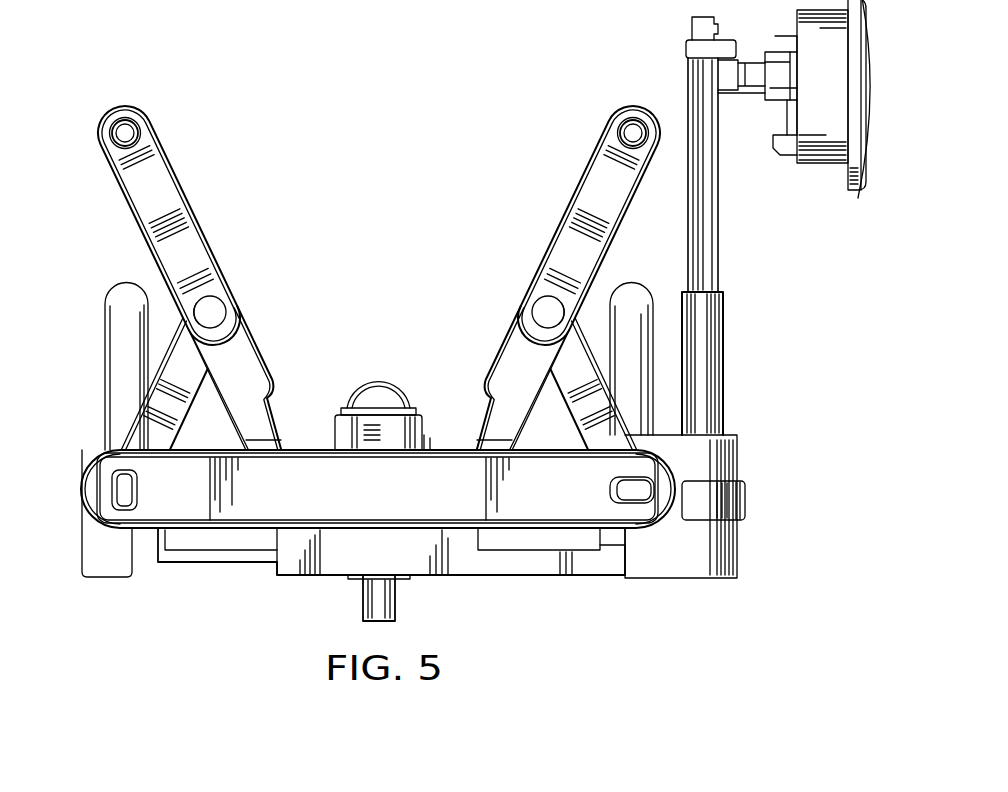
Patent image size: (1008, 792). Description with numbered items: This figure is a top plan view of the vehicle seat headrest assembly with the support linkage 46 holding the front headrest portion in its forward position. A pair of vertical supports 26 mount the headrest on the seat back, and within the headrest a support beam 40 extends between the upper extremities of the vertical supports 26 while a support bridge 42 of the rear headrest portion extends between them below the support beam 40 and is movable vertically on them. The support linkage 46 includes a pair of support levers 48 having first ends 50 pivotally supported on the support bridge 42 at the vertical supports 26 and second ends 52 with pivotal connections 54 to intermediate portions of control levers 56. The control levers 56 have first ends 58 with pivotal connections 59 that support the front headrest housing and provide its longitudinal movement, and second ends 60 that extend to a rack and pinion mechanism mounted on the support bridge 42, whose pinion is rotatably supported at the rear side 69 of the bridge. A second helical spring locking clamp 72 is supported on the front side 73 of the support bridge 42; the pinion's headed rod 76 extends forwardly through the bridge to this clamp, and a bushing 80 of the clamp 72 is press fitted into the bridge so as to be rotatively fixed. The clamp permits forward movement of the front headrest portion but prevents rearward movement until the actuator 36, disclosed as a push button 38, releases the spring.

The vertical supports 26 is at (105, 328).
The actuator 36 is at (853, 190).
The push button 38 is at (876, 86).
The support beam 40 is at (242, 514).
The support bridge 42 is at (508, 584).
The support linkage 46 is at (108, 238).
The support levers 48 is at (134, 395).
The first ends 50 is at (88, 468).
The second ends 52 is at (232, 364).
The pivotal connections 54 is at (214, 304).
The control levers 56 is at (204, 203).
The first ends 58 is at (100, 121).
The pivotal connections 59 is at (120, 136).
The second ends 60 is at (276, 440).
The rear side 69 is at (458, 578).
The second helical spring locking clamp 72 is at (377, 384).
The front side 73 is at (438, 448).
The headed rod 76 is at (356, 405).
The bushing 80 is at (350, 428).